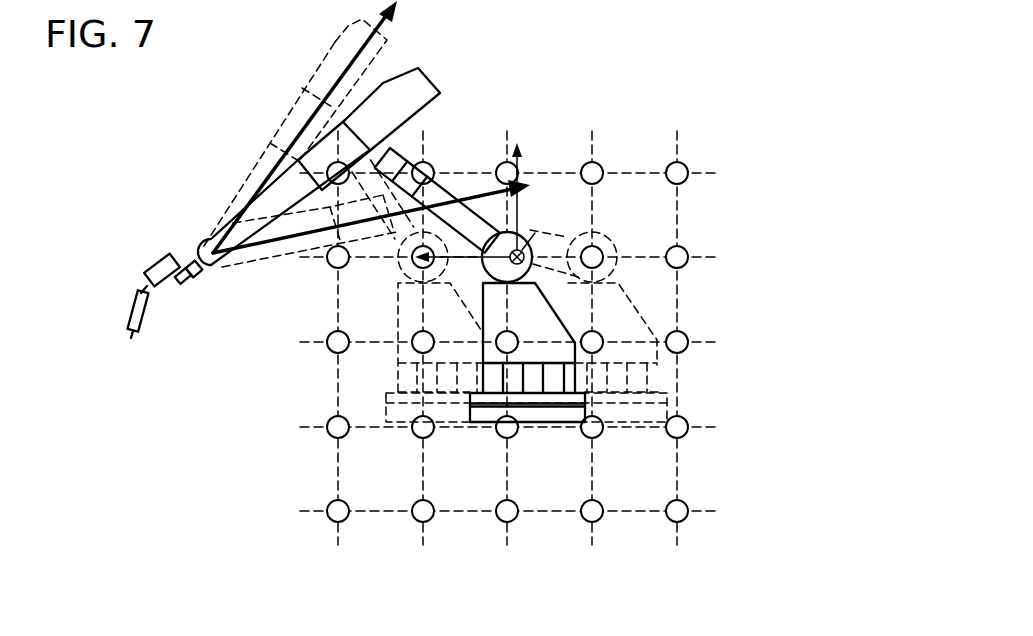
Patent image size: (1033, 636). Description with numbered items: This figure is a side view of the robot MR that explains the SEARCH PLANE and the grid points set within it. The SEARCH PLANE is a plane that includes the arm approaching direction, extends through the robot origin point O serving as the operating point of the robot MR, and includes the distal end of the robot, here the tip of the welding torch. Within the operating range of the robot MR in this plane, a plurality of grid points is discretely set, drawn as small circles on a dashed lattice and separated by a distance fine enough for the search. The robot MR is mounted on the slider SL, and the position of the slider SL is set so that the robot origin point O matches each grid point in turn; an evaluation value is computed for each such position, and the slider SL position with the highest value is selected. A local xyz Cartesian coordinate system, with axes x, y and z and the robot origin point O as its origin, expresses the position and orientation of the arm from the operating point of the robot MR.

The robot MR is at (481, 51).
The robot origin point O is at (485, 181).
The slider SL is at (560, 425).
The search plane SEARCH PLANE is at (634, 173).
The x axis x is at (455, 268).
The y axis y is at (538, 240).
The z axis z is at (524, 189).